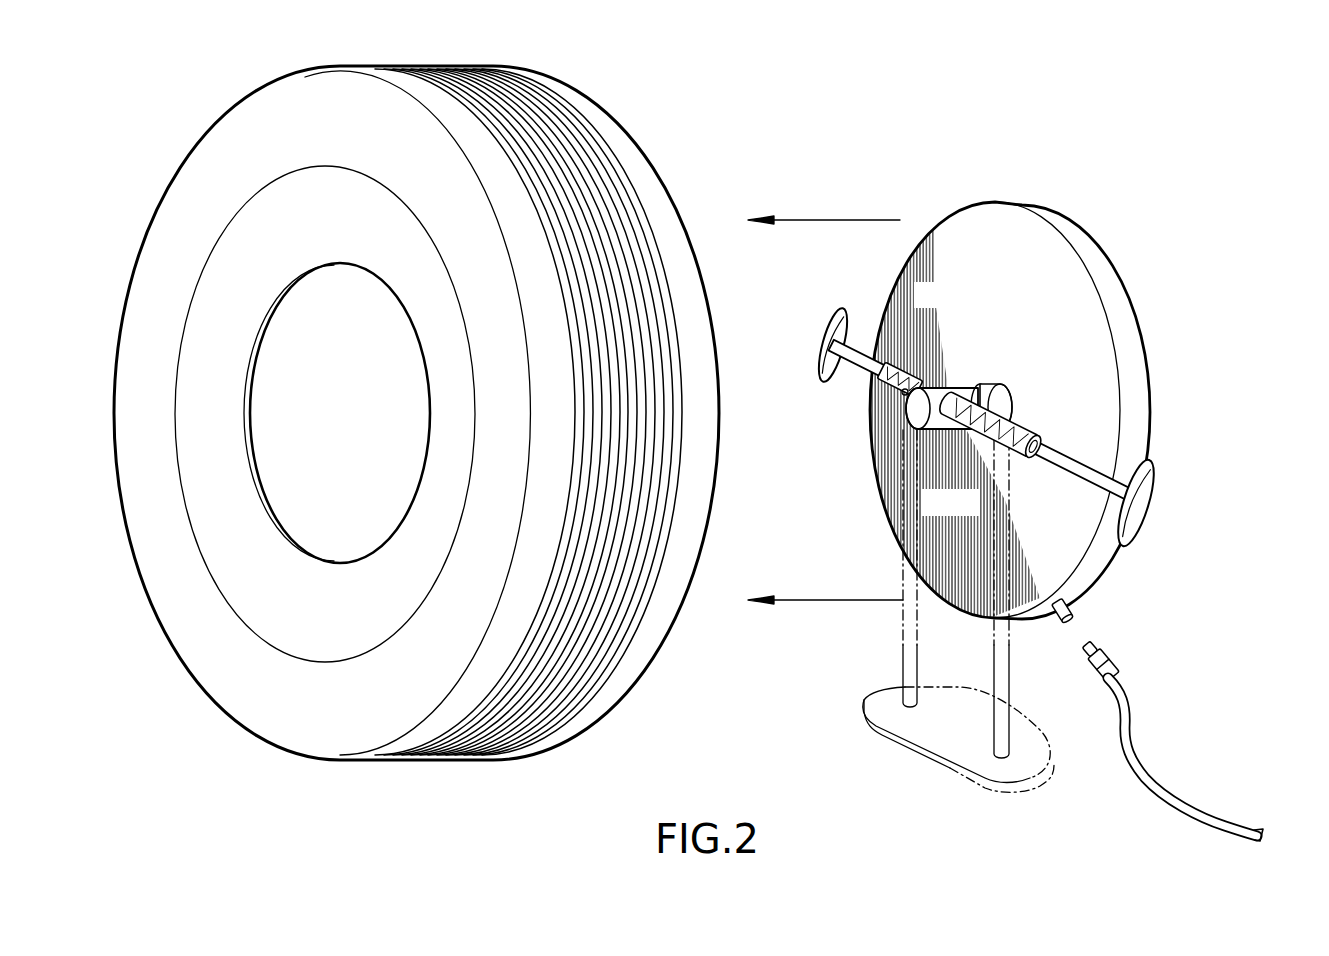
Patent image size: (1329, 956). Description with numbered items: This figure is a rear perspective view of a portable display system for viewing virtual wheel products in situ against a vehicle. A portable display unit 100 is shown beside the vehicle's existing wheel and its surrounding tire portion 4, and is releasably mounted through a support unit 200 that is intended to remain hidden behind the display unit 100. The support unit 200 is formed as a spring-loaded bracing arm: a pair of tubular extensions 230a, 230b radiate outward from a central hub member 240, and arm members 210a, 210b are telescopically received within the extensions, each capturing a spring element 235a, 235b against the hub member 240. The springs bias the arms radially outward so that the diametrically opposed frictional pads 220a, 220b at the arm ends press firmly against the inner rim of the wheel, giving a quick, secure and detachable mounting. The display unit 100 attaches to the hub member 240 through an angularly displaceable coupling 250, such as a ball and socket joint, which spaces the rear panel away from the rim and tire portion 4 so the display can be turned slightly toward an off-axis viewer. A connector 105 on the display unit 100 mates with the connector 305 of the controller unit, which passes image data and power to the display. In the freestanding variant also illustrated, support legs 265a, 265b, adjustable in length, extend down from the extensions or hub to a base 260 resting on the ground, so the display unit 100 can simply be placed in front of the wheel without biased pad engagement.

The tire portion 4 is at (274, 125).
The portable display unit 100 is at (1027, 594).
The connector 105 is at (1075, 604).
The support unit 200 is at (972, 439).
The arm member 210a is at (868, 351).
The arm member 210b is at (1077, 470).
The frictional pad 220a is at (818, 313).
The frictional pad 220b is at (1147, 500).
The tubular extension 230a is at (888, 382).
The tubular extension 230b is at (997, 452).
The spring element 235a is at (903, 390).
The spring element 235b is at (1003, 430).
The hub member 240 is at (917, 410).
The angularly displaceable coupling 250 is at (1003, 388).
The base 260 is at (887, 737).
The support leg 265a is at (904, 583).
The support leg 265b is at (993, 680).
The connector 305 is at (1087, 668).